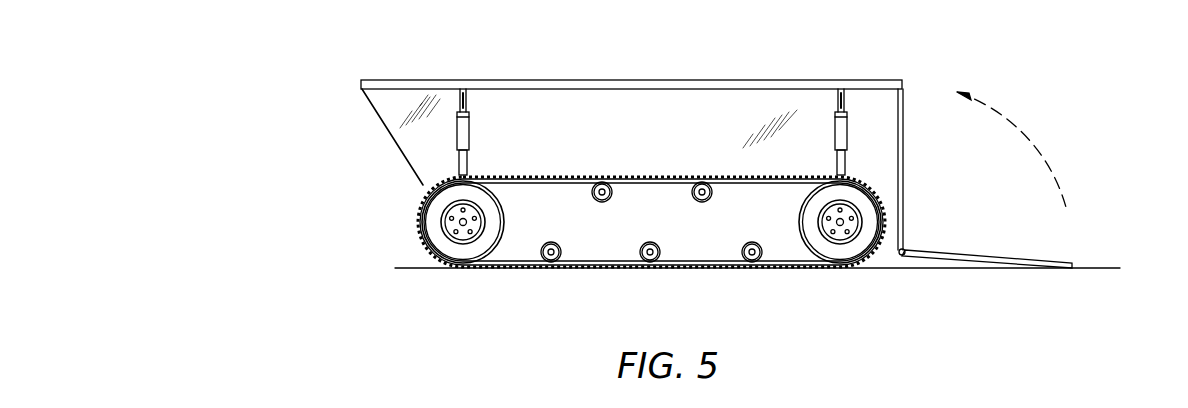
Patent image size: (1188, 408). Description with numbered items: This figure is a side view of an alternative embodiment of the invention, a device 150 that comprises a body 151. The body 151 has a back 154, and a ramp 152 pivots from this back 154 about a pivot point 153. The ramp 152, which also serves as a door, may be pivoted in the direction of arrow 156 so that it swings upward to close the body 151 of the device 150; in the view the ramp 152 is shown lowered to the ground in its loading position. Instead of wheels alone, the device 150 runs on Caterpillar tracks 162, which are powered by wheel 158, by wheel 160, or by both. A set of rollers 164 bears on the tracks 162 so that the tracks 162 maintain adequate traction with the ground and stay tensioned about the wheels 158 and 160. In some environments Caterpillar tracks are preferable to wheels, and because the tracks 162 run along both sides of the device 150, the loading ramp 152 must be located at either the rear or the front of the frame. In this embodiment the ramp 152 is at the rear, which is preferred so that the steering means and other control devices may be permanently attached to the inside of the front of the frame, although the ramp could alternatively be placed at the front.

The device 150 is at (601, 181).
The body 151 is at (483, 84).
The ramp 152 is at (958, 254).
The pivot point 153 is at (897, 253).
The back 154 is at (903, 108).
The arrow 156 is at (1040, 147).
The wheel 158 is at (850, 253).
The wheel 160 is at (453, 252).
The Caterpillar tracks 162 is at (517, 265).
The rollers 164 is at (602, 202).